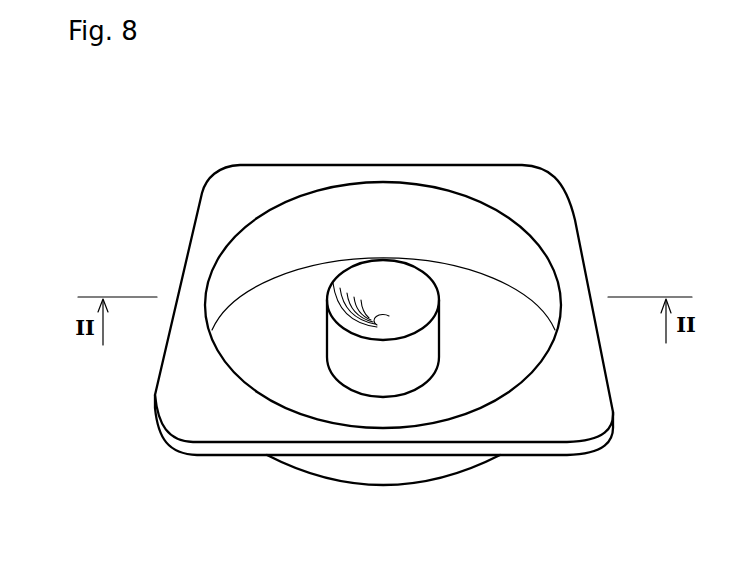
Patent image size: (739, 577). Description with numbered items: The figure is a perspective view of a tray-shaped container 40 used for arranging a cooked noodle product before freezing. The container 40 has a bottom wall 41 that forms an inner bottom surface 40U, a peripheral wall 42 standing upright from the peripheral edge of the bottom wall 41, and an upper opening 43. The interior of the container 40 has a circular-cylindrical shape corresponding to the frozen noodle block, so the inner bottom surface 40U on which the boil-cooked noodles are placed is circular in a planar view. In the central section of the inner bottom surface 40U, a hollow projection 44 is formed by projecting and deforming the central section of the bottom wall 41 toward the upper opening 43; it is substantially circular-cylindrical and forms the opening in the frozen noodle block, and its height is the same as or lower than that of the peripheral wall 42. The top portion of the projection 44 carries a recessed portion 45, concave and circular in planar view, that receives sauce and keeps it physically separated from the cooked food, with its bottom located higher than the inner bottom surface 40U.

The container 40 is at (389, 303).
The inner bottom surface 40U is at (467, 380).
The bottom wall 41 is at (384, 355).
The peripheral wall 42 is at (377, 213).
The upper opening 43 is at (334, 210).
The projection 44 is at (378, 360).
The recessed portion 45 is at (371, 290).